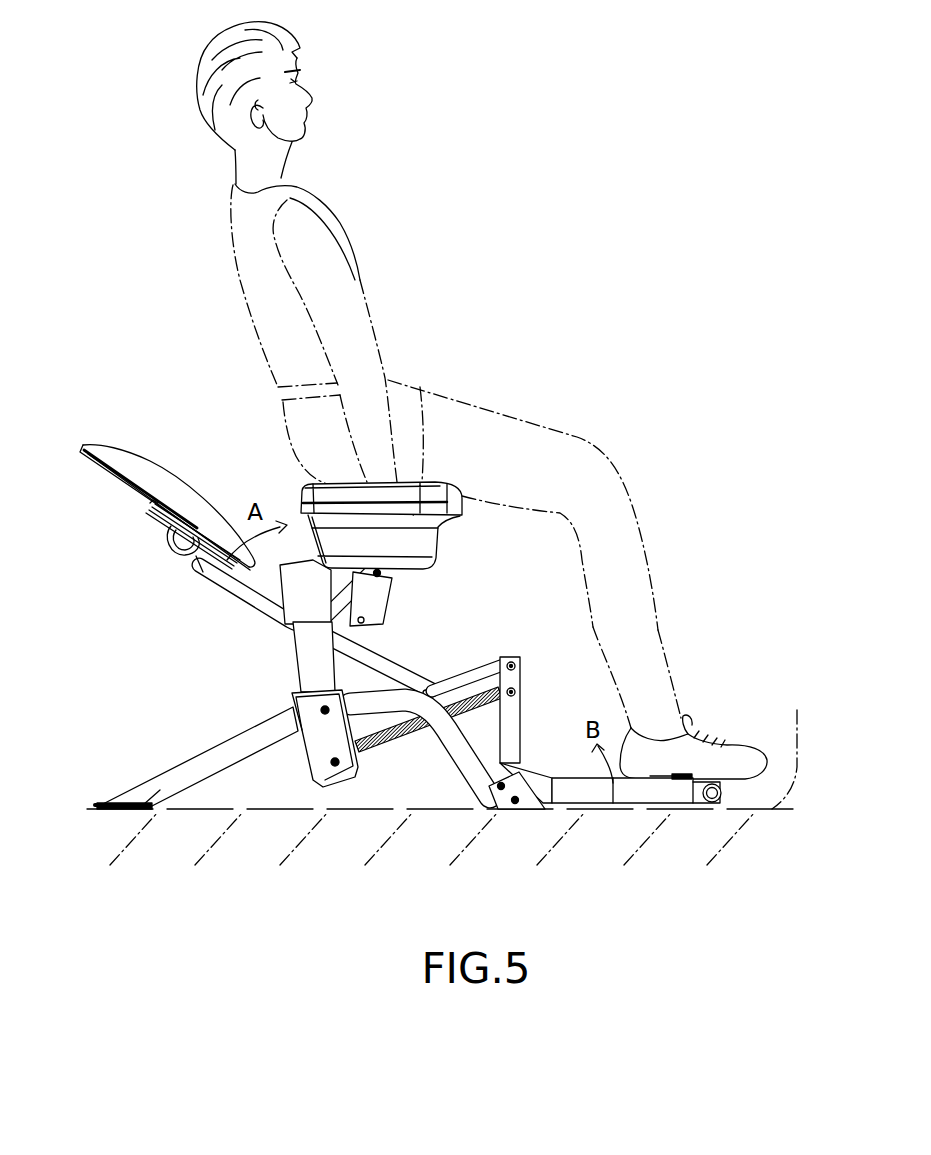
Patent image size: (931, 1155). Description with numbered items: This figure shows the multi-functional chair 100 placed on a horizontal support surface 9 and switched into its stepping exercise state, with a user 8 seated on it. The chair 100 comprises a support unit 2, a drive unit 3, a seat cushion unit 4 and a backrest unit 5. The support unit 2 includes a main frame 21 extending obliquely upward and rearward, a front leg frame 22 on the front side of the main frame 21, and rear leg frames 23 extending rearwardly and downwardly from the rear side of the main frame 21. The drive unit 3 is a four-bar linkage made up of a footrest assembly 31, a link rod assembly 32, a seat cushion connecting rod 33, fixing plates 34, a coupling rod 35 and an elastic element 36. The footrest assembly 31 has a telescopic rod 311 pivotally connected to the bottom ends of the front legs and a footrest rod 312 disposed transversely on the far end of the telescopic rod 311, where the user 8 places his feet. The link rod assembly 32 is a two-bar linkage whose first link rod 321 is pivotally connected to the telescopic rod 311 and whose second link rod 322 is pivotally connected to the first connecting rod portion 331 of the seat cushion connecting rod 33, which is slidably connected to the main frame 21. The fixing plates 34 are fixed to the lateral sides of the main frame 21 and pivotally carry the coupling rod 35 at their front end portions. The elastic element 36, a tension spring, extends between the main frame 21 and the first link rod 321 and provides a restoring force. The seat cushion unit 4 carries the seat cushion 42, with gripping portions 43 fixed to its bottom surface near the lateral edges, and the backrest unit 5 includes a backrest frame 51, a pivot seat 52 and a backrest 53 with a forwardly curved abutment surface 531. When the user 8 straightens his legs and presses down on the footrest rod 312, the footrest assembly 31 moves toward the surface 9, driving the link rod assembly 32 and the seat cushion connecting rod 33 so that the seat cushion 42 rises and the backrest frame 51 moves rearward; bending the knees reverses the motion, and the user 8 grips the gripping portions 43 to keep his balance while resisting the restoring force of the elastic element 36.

The multi-functional chair 100 is at (114, 418).
The user 8 is at (343, 223).
The horizontal support surface 9 is at (443, 772).
The backrest 53 is at (159, 460).
The abutment surface 531 is at (193, 534).
The backrest unit 5 is at (143, 533).
The pivot seat 52 is at (181, 550).
The backrest frame 51 is at (207, 563).
The support unit 2 is at (278, 652).
The fixing plates 34 is at (296, 593).
The coupling rod 35 is at (383, 572).
The seat cushion connecting rod 33 is at (375, 660).
The first connecting rod portion 331 is at (379, 663).
The second link rod 322 is at (484, 672).
The elastic element 36 is at (386, 745).
The drive unit 3 is at (534, 669).
The link rod assembly 32 is at (515, 722).
The first link rod 321 is at (526, 730).
The footrest assembly 31 is at (592, 790).
The telescopic rod 311 is at (636, 790).
The footrest rod 312 is at (713, 783).
The main frame 21 is at (312, 668).
The rear leg frames 23 is at (203, 767).
The front leg frame 22 is at (468, 745).
The seat cushion unit 4 is at (441, 488).
The seat cushion 42 is at (381, 498).
The gripping portions 43 is at (438, 522).